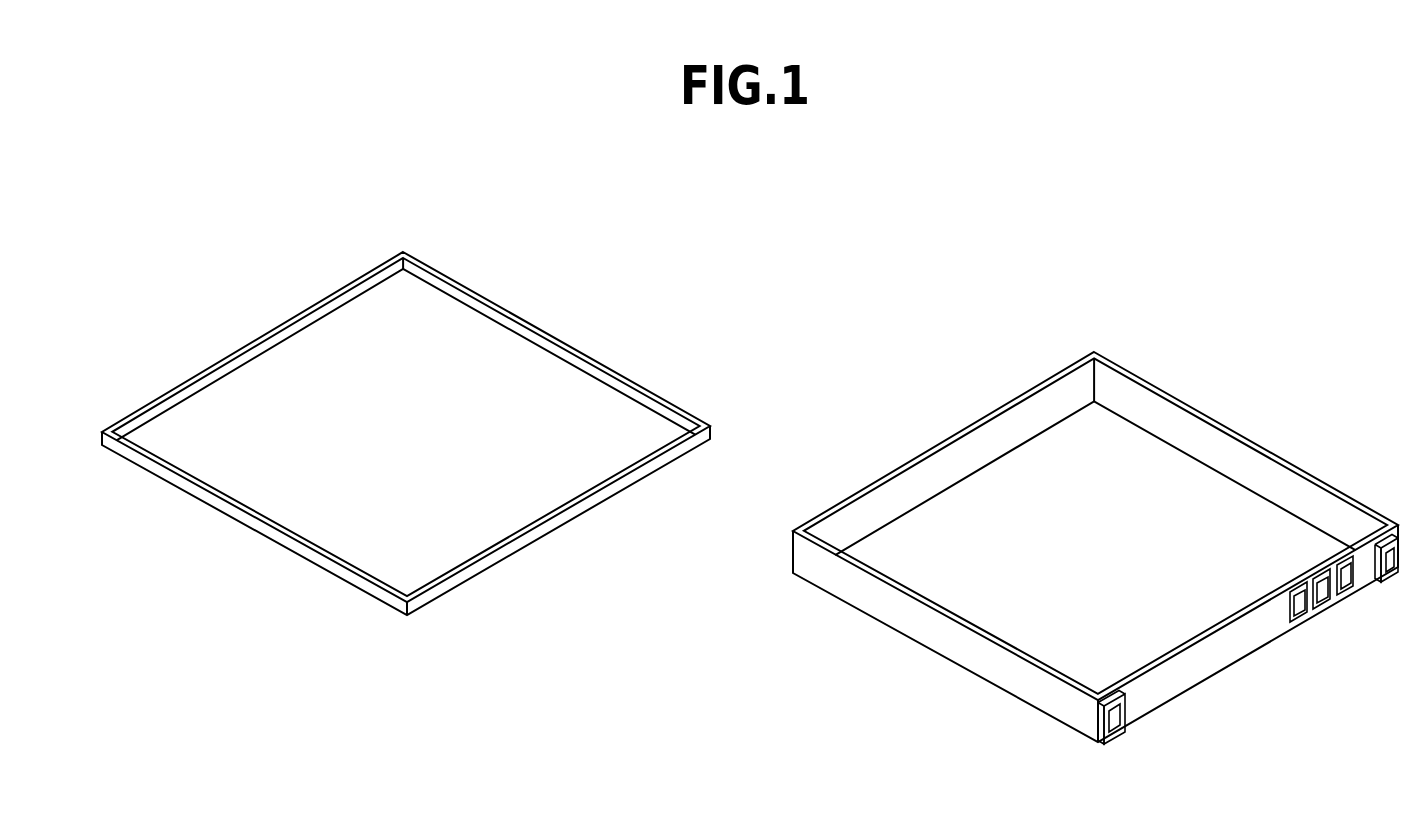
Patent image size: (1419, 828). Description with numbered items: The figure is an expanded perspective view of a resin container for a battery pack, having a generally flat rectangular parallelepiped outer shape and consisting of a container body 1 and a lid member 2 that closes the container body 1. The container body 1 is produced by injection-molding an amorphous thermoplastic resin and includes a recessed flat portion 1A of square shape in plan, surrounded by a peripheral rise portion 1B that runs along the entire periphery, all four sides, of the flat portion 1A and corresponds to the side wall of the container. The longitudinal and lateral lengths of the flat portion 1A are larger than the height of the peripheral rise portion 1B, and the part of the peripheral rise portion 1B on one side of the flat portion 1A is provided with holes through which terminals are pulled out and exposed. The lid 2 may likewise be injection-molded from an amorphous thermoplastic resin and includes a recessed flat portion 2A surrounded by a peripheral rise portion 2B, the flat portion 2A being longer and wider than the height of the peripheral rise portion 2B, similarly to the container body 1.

The container body 1 is at (942, 410).
The flat portion 1A is at (1020, 612).
The peripheral rise portion 1B is at (1252, 470).
The lid member 2 is at (598, 320).
The flat portion 2A is at (307, 498).
The peripheral rise portion 2B is at (517, 326).